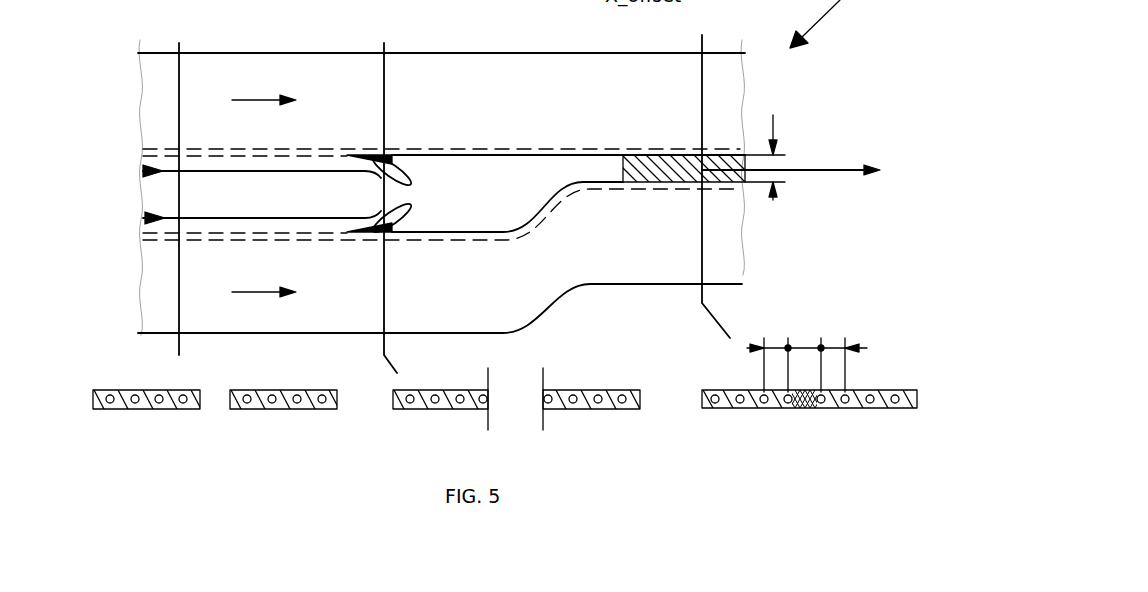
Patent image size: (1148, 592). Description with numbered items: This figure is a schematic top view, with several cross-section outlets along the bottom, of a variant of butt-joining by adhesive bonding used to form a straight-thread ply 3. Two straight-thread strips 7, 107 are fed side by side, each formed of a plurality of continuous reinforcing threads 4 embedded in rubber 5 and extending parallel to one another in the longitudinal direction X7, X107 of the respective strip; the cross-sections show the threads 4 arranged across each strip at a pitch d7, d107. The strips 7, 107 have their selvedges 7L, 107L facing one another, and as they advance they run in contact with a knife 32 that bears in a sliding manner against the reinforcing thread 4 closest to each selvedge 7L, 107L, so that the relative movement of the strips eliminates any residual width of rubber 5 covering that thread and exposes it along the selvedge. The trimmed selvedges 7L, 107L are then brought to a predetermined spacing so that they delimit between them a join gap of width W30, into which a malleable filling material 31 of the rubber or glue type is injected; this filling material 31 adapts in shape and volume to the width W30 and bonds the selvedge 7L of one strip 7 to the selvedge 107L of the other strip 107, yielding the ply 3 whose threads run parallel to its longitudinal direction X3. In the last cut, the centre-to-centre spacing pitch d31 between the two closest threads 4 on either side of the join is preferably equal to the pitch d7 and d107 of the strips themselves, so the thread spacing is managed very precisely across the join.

The straight-thread strip 7 is at (160, 96).
The straight-thread strip 107 is at (160, 281).
The reinforcing threads 4 is at (146, 147).
The rubber 5 is at (378, 222).
The selvedge 7L is at (150, 172).
The selvedge 107L is at (152, 217).
The knife 32 is at (391, 156).
The straight-thread ply 3 is at (726, 66).
The filling material 31 is at (806, 409).
The longitudinal direction of strip X7 is at (257, 100).
The longitudinal direction of strip X107 is at (256, 292).
The longitudinal direction of ply X3 is at (845, 168).
The width of join gap W30 is at (705, 146).
The pitch of reinforcing threads d7 is at (775, 347).
The spacing pitch d31 is at (806, 347).
The pitch of reinforcing threads d107 is at (835, 347).